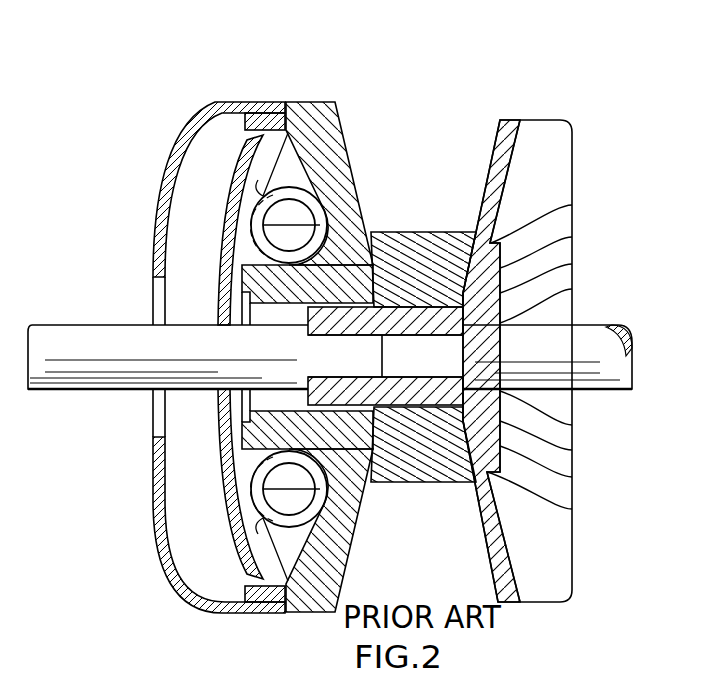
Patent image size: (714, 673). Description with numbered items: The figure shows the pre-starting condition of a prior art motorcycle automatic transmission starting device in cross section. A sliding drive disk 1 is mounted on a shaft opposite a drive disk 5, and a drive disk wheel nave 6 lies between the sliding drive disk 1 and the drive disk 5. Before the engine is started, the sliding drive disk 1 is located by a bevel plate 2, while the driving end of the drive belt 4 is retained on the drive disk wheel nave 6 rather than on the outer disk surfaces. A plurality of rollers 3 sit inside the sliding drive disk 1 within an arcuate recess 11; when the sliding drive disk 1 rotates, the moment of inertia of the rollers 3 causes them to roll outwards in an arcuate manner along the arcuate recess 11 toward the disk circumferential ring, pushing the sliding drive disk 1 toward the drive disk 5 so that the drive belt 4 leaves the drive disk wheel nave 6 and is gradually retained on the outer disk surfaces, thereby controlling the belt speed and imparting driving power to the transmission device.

The sliding drive disk 1 is at (317, 117).
The bevel plate 2 is at (227, 200).
The rollers 3 is at (260, 245).
The drive belt 4 is at (414, 250).
The drive disk 5 is at (513, 137).
The drive disk wheel nave 6 is at (425, 400).
The arcuate recess 11 is at (307, 540).